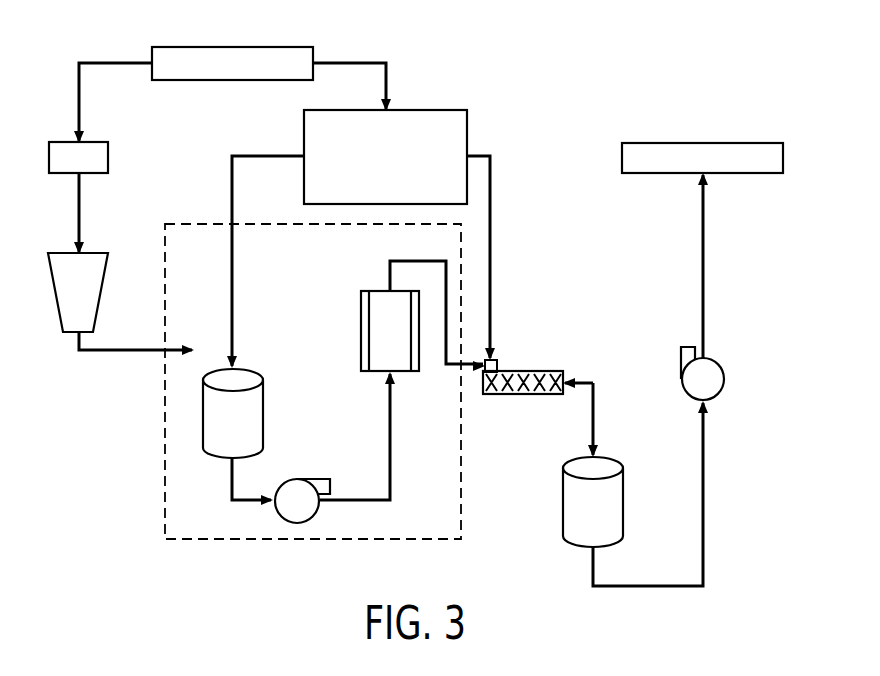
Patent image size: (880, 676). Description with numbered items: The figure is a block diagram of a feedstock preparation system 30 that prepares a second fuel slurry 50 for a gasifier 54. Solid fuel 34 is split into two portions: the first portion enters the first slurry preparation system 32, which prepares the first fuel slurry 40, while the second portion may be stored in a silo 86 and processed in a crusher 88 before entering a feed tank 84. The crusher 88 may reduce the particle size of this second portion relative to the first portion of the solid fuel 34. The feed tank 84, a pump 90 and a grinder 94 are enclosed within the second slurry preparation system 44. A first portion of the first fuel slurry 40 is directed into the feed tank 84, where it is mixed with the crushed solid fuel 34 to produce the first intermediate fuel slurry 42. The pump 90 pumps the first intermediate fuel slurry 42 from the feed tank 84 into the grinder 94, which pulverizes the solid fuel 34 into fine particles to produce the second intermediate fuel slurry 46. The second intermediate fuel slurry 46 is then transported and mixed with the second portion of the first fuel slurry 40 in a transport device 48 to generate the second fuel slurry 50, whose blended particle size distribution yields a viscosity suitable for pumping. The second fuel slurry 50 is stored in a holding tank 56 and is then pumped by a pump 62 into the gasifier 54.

The feedstock preparation system 30 is at (724, 70).
The first slurry preparation system 32 is at (427, 110).
The solid fuel 34 is at (233, 47).
The first fuel slurry 40 is at (232, 192).
The first intermediate fuel slurry 42 is at (246, 501).
The second slurry preparation system 44 is at (165, 462).
The second intermediate fuel slurry 46 is at (418, 261).
The transport device 48 is at (522, 394).
The second fuel slurry 50 is at (497, 366).
The gasifier 54 is at (622, 155).
The holding tank 56 is at (623, 500).
The pump 62 is at (681, 360).
The feed tank 84 is at (245, 368).
The silo 86 is at (108, 160).
The crusher 88 is at (100, 292).
The pump 90 is at (311, 480).
The grinder 94 is at (361, 332).